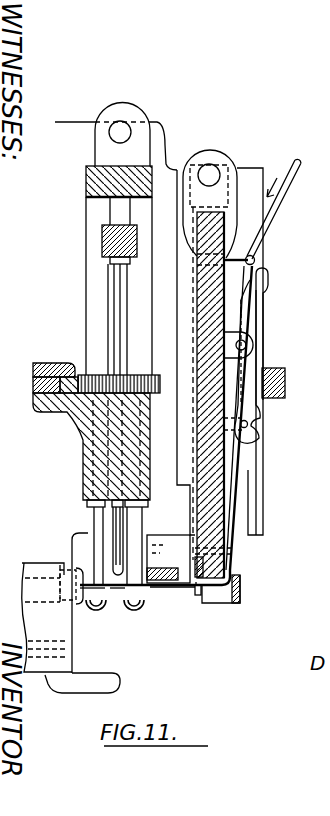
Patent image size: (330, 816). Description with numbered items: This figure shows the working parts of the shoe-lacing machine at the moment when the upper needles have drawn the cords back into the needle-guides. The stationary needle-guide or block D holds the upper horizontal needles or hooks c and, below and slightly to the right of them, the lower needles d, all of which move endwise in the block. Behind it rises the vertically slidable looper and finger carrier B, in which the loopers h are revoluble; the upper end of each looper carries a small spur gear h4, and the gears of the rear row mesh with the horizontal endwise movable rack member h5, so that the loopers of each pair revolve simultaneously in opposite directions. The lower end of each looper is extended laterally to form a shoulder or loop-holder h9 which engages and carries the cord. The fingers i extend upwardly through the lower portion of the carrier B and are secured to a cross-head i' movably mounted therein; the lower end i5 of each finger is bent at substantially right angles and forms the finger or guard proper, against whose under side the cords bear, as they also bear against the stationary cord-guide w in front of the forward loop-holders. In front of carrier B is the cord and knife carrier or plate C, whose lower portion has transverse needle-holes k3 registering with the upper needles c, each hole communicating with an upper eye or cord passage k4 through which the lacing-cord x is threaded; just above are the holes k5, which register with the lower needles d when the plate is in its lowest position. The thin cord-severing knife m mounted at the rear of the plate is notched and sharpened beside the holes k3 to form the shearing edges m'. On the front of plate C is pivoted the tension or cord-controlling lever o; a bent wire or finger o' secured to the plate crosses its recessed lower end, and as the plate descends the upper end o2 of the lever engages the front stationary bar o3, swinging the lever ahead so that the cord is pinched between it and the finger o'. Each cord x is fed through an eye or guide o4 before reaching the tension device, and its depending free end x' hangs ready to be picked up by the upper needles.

The looper and finger carrier B is at (86, 214).
The cross-head i' is at (91, 230).
The fingers i is at (94, 419).
The spur gear h4 is at (88, 377).
The rack member h5 is at (56, 385).
The loopers h is at (94, 513).
The loop-holder h9 is at (99, 615).
The free ends of the cords x' is at (91, 616).
The lower end of finger i5 is at (117, 598).
The eye or cord passage k4 is at (236, 573).
The transverse holes k3 is at (244, 595).
The cord-severing knife m is at (218, 611).
The cutting or shearing edges m' is at (186, 590).
The stationary cord-guide w is at (163, 605).
The holes k5 is at (232, 550).
The needle-guide or block D is at (40, 607).
The upper needles or hooks c is at (64, 573).
The lower needles d is at (76, 640).
The cord and knife carrier C is at (226, 470).
The lacing-cord x is at (274, 209).
The eye or guide o4 is at (254, 260).
The tension or cord-controlling lever o is at (264, 355).
The bent wire or finger o' is at (261, 427).
The upper end of tension lever o2 is at (264, 284).
The front stationary bar o3 is at (286, 381).